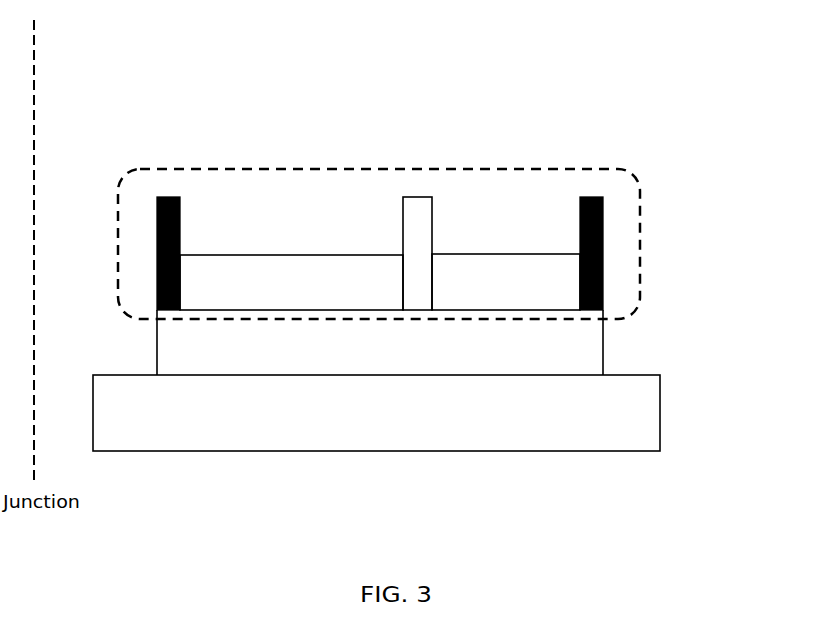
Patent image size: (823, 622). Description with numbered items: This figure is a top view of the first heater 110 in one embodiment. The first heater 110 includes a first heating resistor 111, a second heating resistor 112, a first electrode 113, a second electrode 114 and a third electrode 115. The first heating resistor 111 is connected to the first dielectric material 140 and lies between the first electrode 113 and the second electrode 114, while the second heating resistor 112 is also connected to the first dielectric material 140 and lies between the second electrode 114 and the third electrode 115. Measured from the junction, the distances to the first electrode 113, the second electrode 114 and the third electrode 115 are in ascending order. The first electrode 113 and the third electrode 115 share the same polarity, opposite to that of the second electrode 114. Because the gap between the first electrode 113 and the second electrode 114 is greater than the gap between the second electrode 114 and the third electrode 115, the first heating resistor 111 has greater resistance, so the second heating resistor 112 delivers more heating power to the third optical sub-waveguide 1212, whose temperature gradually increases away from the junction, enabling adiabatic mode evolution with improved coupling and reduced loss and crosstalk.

The first heater 110 is at (122, 182).
The first heating resistor 111 is at (268, 255).
The second heating resistor 112 is at (478, 254).
The first electrode 113 is at (168, 197).
The second electrode 114 is at (422, 197).
The third electrode 115 is at (595, 197).
The first dielectric material 140 is at (603, 343).
The third optical sub-waveguide 1212 is at (660, 412).